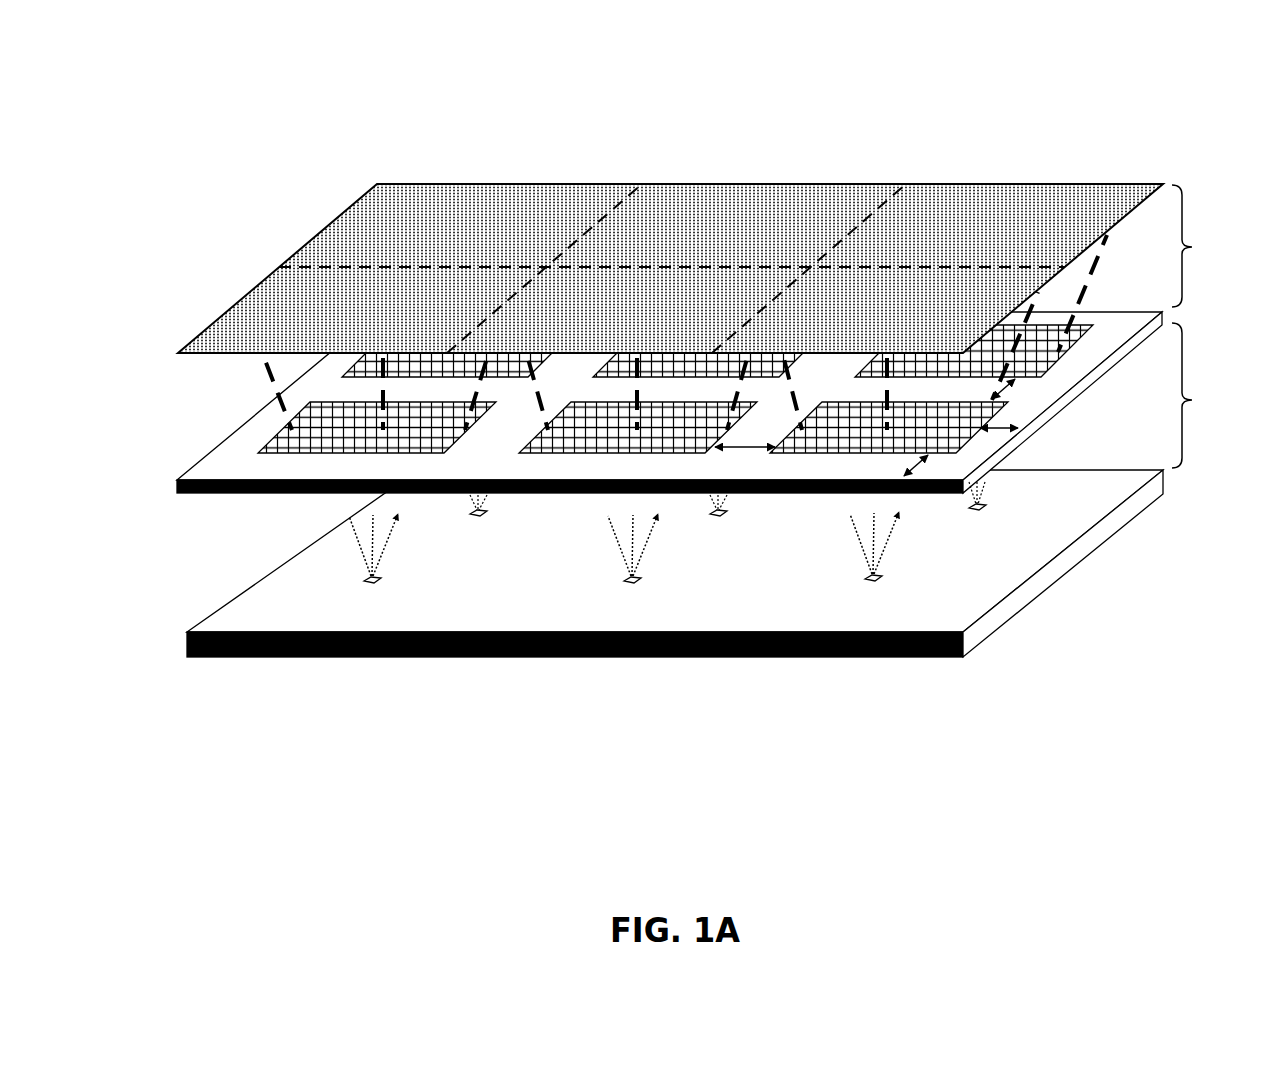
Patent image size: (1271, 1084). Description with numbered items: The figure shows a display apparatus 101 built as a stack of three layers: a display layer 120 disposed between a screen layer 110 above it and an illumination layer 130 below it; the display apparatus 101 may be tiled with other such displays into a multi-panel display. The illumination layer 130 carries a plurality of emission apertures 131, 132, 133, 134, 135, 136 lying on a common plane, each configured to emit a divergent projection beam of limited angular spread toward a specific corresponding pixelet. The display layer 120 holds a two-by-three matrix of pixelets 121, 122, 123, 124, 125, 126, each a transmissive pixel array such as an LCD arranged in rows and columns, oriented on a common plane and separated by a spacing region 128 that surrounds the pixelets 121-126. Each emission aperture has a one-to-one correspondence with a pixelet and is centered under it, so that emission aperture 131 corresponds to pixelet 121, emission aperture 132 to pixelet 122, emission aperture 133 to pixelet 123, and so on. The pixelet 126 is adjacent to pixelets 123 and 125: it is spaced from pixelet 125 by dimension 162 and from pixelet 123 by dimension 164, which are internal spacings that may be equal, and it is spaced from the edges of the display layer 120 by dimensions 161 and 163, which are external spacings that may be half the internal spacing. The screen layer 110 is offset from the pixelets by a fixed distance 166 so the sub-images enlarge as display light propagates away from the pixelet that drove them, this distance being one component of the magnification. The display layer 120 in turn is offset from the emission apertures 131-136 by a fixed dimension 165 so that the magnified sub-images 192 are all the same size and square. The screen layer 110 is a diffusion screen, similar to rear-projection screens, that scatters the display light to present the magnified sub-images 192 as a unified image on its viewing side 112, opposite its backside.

The display apparatus 101 is at (303, 108).
The screen layer 110 is at (655, 248).
The viewing side 112 is at (1048, 212).
The display layer 120 is at (222, 442).
The pixelet 121 is at (353, 378).
The pixelet 122 is at (604, 375).
The pixelet 123 is at (856, 373).
The pixelet 124 is at (395, 455).
The pixelet 125 is at (640, 455).
The pixelet 126 is at (843, 455).
The spacing region 128 is at (249, 469).
The illumination layer 130 is at (237, 597).
The emission aperture 131 is at (475, 517).
The emission aperture 132 is at (715, 517).
The emission aperture 133 is at (973, 511).
The emission aperture 134 is at (368, 585).
The emission aperture 135 is at (629, 582).
The emission aperture 136 is at (868, 580).
The dimension 161 is at (913, 468).
The dimension 162 is at (748, 449).
The dimension 163 is at (978, 445).
The dimension 164 is at (1018, 394).
The fixed dimension 165 is at (1201, 395).
The fixed distance 166 is at (1200, 246).
The magnified sub-image 192 is at (465, 229).